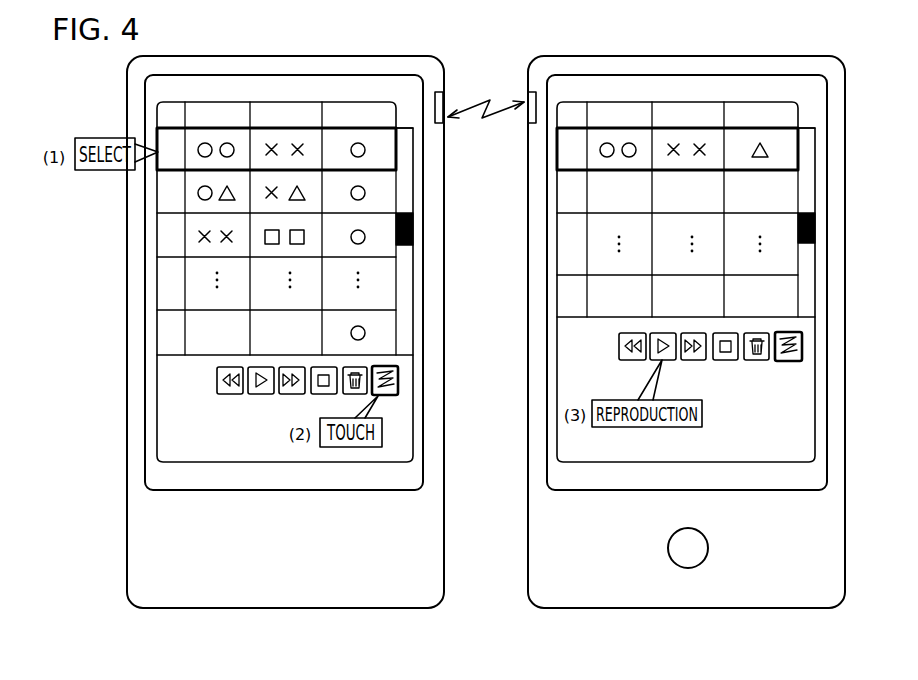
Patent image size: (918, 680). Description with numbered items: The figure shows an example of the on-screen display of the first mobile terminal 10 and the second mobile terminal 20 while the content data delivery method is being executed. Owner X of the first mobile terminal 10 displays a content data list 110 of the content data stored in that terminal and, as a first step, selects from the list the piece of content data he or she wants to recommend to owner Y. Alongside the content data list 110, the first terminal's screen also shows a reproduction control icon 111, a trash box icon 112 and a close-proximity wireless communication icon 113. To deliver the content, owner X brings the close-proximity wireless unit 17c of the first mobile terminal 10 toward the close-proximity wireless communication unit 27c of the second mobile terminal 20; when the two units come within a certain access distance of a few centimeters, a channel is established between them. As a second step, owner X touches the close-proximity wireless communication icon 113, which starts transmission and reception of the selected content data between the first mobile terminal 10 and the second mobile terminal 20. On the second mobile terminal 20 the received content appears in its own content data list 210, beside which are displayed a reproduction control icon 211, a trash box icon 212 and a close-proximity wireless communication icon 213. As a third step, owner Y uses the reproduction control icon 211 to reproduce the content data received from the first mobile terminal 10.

The first mobile terminal 10 is at (302, 608).
The close-proximity wireless unit 17c is at (446, 100).
The content data list 110 is at (158, 238).
The reproduction control icon 111 is at (335, 398).
The trash box icon 112 is at (357, 394).
The close-proximity wireless communication icon 113 is at (398, 381).
The second mobile terminal 20 is at (705, 608).
The close-proximity wireless communication unit 27c is at (524, 100).
The content data list 210 is at (560, 251).
The reproduction control icon 211 is at (619, 363).
The trash box icon 212 is at (757, 360).
The close-proximity wireless communication icon 213 is at (802, 345).